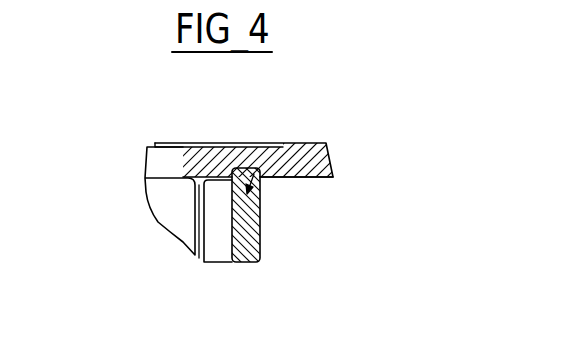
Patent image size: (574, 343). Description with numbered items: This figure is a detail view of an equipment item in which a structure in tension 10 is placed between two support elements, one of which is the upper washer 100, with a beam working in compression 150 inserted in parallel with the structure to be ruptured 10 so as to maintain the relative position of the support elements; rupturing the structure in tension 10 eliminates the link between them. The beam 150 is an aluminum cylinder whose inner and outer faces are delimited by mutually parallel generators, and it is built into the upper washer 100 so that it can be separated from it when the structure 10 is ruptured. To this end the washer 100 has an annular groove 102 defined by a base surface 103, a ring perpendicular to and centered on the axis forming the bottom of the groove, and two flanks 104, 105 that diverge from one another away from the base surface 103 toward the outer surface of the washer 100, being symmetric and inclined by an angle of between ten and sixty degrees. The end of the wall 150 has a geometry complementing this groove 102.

The structure in tension 10 is at (193, 237).
The upper washer 100 is at (318, 158).
The annular groove 102 is at (262, 205).
The base surface 103 is at (245, 165).
The flank 104 is at (217, 163).
The flank 105 is at (298, 178).
The beam working in compression 150 is at (247, 258).